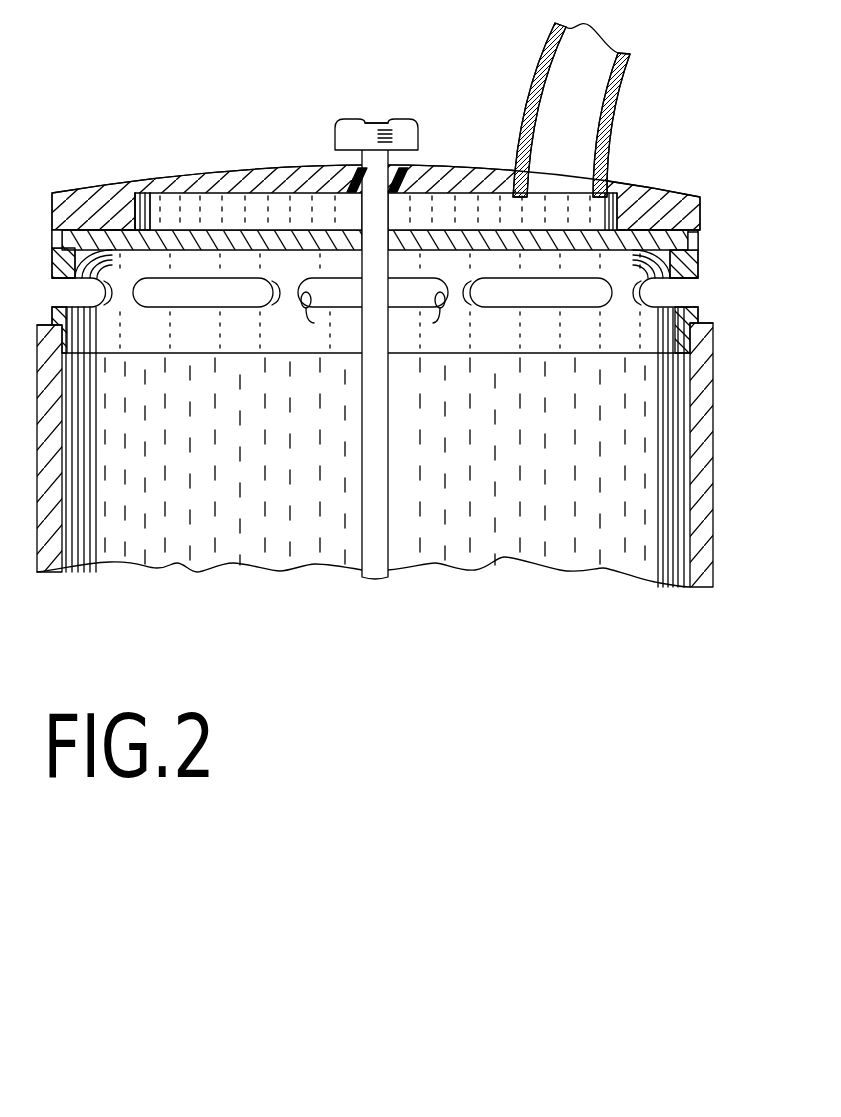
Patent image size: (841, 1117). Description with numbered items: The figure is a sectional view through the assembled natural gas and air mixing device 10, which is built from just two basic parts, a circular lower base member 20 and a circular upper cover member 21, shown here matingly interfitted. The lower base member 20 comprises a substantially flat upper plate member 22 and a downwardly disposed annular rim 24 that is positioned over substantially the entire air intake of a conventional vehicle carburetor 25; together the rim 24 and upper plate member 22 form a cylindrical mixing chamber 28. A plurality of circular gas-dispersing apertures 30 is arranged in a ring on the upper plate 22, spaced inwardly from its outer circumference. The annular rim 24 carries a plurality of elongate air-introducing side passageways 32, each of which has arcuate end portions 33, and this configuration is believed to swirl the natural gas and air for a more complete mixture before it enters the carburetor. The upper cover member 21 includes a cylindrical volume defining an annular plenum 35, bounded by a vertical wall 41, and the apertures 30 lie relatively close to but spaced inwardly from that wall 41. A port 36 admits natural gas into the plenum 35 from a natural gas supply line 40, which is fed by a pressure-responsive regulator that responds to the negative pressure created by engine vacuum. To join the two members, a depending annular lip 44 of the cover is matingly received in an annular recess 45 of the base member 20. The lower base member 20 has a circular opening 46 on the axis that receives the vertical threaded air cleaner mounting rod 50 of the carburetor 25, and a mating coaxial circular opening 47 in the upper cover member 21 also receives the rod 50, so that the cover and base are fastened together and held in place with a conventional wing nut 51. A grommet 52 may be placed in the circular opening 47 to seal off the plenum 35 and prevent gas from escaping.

The natural gas and air mixing device 10 is at (228, 85).
The lower base member 20 is at (53, 265).
The upper cover member 21 is at (100, 183).
The upper plate member 22 is at (480, 232).
The annular rim 24 is at (490, 342).
The vehicle carburetor 25 is at (713, 495).
The mixing chamber 28 is at (297, 335).
The gas-dispersing apertures 30 is at (151, 239).
The air-introducing side passageways 32 is at (72, 292).
The arcuate end portions 33 is at (379, 318).
The annular plenum 35 is at (228, 215).
The port 36 is at (554, 185).
The natural gas supply line 40 is at (520, 130).
The vertical wall 41 is at (150, 238).
The depending annular lip 44 is at (55, 238).
The annular recess 45 is at (688, 250).
The circular opening 46 is at (392, 230).
The coaxial circular opening 47 is at (348, 165).
The air cleaner mounting rod 50 is at (388, 450).
The wing nut 51 is at (342, 120).
The grommet 52 is at (403, 165).